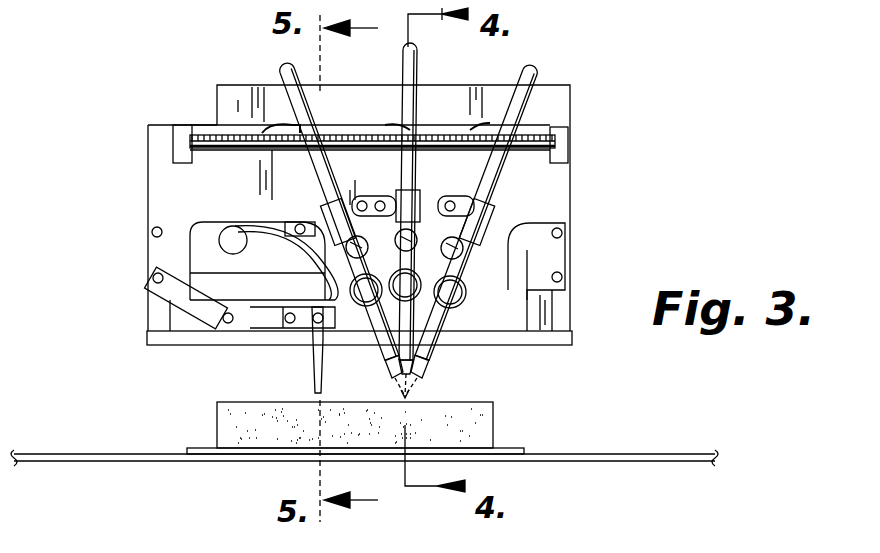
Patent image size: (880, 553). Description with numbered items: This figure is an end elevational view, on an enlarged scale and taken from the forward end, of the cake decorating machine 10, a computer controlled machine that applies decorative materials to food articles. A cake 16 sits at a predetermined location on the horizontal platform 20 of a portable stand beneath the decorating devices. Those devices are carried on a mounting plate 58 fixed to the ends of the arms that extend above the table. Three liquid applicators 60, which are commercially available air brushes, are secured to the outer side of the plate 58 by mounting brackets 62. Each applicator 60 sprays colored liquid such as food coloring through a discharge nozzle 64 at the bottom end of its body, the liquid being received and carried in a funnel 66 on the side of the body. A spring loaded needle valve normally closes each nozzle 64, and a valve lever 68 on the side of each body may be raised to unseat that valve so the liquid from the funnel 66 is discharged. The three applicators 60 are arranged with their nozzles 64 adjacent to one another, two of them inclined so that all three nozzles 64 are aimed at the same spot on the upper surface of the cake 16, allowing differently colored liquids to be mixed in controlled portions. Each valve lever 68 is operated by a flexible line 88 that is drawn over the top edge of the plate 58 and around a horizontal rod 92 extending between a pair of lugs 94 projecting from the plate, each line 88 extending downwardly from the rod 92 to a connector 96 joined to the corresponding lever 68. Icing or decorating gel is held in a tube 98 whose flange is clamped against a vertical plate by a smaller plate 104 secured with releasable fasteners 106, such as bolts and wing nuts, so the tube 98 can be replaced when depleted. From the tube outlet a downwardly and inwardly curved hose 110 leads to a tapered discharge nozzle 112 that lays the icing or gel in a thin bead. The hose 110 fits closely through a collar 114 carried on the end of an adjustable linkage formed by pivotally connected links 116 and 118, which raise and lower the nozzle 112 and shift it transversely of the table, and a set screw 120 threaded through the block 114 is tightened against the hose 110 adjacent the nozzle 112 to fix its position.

The cake decorating machine 10 is at (650, 60).
The cake 16 is at (492, 420).
The horizontal platform 20 is at (600, 456).
The mounting plate 58 is at (567, 192).
The liquid applicator 60 is at (345, 272).
The mounting bracket 62 is at (314, 186).
The discharge nozzle 64 is at (392, 375).
The funnel 66 is at (355, 315).
The valve lever 68 is at (364, 246).
The flexible line 88 is at (358, 130).
The horizontal rod 92 is at (432, 130).
The lug 94 is at (180, 130).
The connector 96 is at (384, 192).
The tube 98 is at (229, 226).
The smaller plate 104 is at (270, 277).
The releasable fastener 106 is at (270, 224).
The curved hose 110 is at (268, 254).
The tapered discharge nozzle 112 is at (312, 392).
The collar 114 is at (290, 332).
The link 116 is at (176, 304).
The link 118 is at (246, 340).
The set screw 120 is at (312, 326).